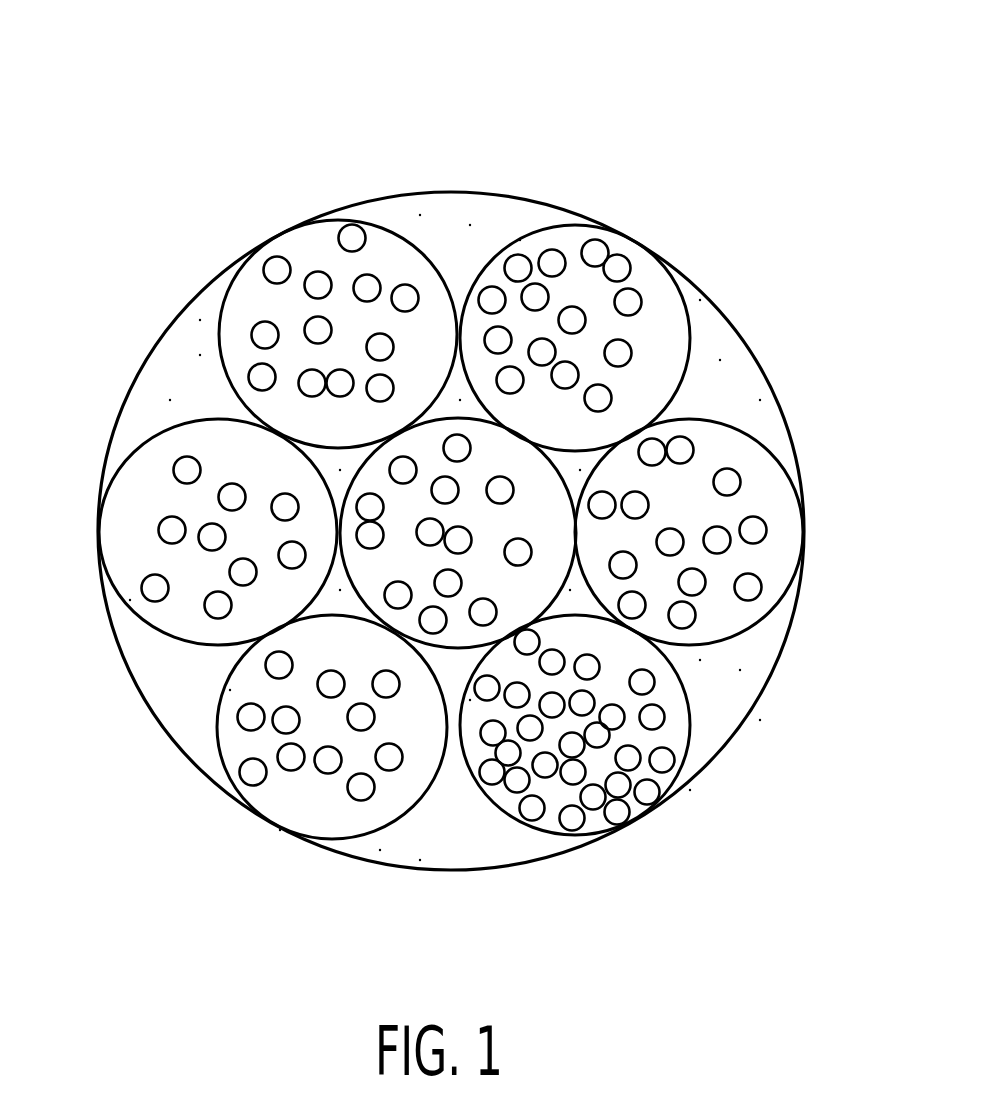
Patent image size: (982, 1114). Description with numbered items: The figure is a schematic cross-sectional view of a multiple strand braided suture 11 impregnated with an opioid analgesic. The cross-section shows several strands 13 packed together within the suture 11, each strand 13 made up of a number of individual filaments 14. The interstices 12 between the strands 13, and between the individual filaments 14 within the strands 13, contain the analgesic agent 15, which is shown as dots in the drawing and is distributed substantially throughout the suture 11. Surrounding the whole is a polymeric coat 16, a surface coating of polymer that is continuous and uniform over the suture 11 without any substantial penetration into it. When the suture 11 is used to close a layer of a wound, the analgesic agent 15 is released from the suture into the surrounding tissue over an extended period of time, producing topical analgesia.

The multiple strand braided suture 11 is at (467, 489).
The interstices 12 is at (467, 489).
The strands 13 is at (760, 435).
The individual filaments 14 is at (160, 515).
The analgesic agent 15 is at (503, 210).
The polymeric coat 16 is at (703, 288).